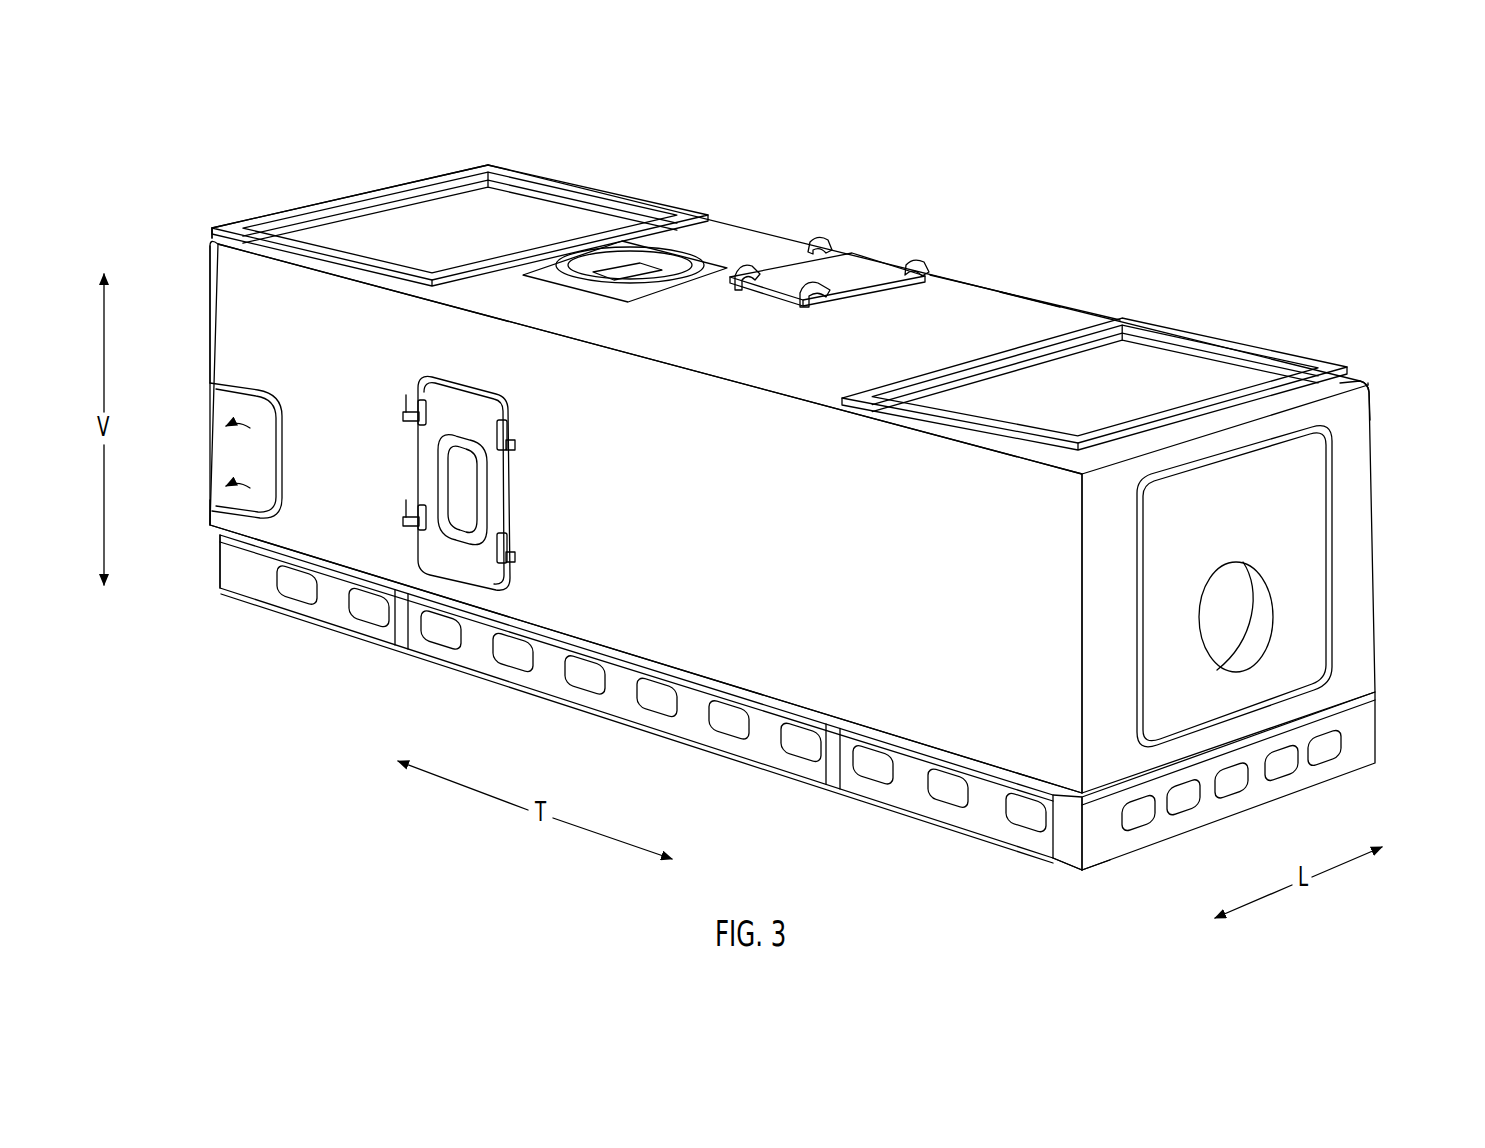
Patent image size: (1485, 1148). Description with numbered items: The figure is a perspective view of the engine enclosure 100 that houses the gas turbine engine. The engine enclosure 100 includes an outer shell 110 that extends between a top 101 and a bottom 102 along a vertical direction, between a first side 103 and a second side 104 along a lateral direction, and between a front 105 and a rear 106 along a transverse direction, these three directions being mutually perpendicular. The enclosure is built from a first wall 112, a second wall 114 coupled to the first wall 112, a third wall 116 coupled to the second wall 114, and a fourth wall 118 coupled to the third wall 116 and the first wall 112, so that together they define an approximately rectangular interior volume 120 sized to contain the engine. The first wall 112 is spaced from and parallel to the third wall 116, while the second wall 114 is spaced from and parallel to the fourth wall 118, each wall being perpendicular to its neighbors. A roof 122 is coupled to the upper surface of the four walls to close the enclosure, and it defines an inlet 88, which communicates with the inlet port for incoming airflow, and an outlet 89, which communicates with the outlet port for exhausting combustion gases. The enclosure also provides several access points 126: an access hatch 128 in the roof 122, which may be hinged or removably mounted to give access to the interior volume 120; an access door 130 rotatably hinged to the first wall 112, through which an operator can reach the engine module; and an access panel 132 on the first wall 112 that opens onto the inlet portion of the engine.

The engine enclosure 100 is at (1124, 123).
The inlet 88 is at (435, 240).
The outlet 89 is at (1167, 374).
The top 101 is at (188, 237).
The bottom 102 is at (206, 561).
The first side 103 is at (1106, 885).
The second side 104 is at (1386, 777).
The front 105 is at (219, 603).
The rear 106 is at (1058, 887).
The outer shell 110 is at (1372, 381).
The first wall 112 is at (880, 626).
The second wall 114 is at (1358, 590).
The third wall 116 is at (1028, 299).
The fourth wall 118 is at (198, 300).
The interior volume 120 is at (947, 322).
The roof 122 is at (998, 321).
The access points 126 is at (799, 261).
The access hatch 128 is at (877, 272).
The access door 130 is at (472, 572).
The access panel 132 is at (232, 468).